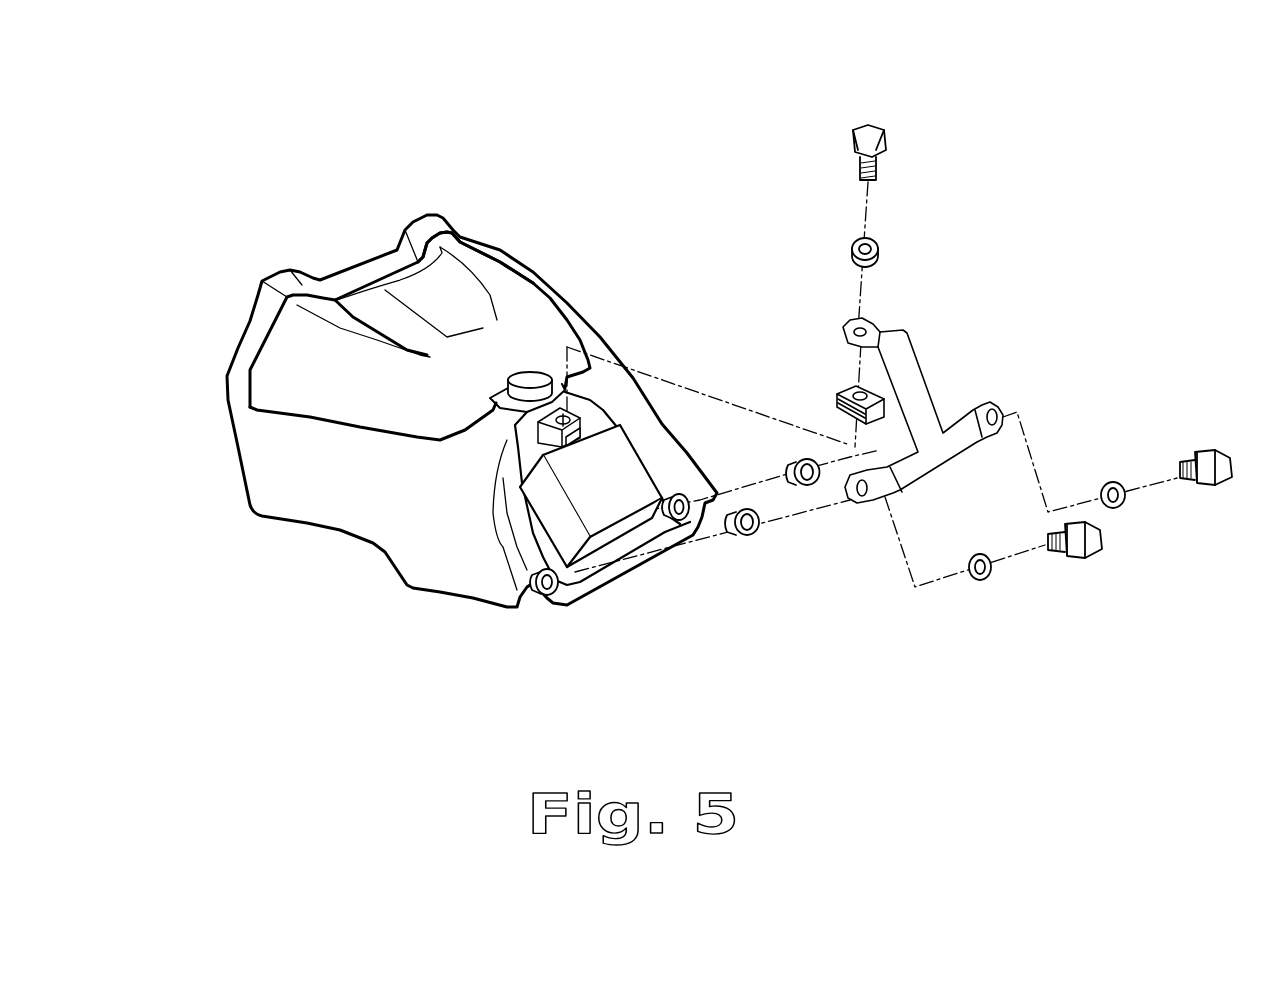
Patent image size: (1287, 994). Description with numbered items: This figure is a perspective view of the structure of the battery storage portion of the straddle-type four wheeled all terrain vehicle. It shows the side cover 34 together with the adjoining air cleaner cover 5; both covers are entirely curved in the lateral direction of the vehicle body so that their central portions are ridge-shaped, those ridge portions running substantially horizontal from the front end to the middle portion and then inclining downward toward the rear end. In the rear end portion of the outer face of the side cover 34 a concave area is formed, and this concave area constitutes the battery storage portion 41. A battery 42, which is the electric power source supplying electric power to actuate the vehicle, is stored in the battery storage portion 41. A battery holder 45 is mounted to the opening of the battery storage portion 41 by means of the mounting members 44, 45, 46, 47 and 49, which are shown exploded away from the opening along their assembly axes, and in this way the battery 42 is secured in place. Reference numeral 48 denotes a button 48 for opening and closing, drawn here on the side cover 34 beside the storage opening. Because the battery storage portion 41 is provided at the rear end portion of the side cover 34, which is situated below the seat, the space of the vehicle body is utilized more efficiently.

The side cover 34 is at (443, 213).
The air cleaner cover 5 is at (511, 297).
The button 48 is at (524, 374).
The battery storage portion 41 is at (628, 455).
The battery 42 is at (630, 457).
The mounting member 44 is at (810, 485).
The battery holder 45 is at (838, 390).
The mounting member 46 is at (878, 245).
The mounting member 47 is at (878, 133).
The mounting member 49 is at (917, 388).